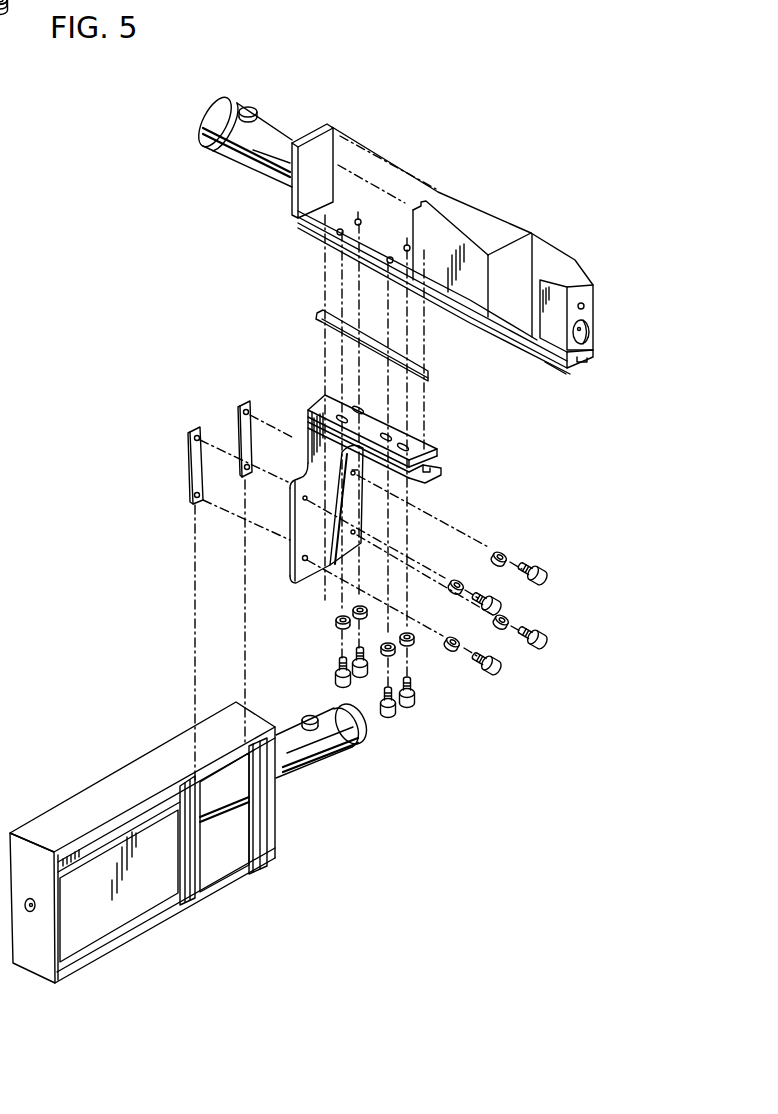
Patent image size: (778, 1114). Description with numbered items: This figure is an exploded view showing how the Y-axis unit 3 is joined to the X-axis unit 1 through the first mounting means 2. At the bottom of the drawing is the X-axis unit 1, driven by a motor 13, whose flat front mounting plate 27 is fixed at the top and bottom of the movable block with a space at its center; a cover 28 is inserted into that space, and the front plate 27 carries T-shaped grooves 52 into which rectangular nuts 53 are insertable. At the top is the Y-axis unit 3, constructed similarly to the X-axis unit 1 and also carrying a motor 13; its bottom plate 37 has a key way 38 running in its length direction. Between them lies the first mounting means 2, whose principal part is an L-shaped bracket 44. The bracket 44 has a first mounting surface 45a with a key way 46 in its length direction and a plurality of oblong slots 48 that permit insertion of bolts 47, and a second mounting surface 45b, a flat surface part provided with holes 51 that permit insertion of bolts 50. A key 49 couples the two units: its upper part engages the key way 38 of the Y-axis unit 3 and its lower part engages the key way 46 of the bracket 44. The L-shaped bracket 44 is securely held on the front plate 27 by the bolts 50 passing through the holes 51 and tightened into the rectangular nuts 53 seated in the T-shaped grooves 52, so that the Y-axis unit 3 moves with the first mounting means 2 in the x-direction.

The X-axis unit 1 is at (107, 798).
The first mounting means 2 is at (352, 507).
The Y-axis unit 3 is at (456, 285).
The motor 13 is at (280, 143).
The front mounting plate 27 is at (220, 873).
The cover 28 is at (132, 897).
The bottom plate 37 is at (551, 362).
The key way 38 is at (580, 366).
The L-shaped bracket 44 is at (378, 511).
The first mounting surface 45a is at (434, 455).
The second mounting surface 45b is at (298, 512).
The key way 46 is at (428, 463).
The bolts 47 is at (410, 703).
The oblong slots 48 is at (412, 438).
The key 49 is at (425, 377).
The bolts 50 is at (492, 673).
The holes 51 is at (304, 562).
The T-shaped grooves 52 is at (255, 873).
The rectangular nuts 53 is at (238, 428).